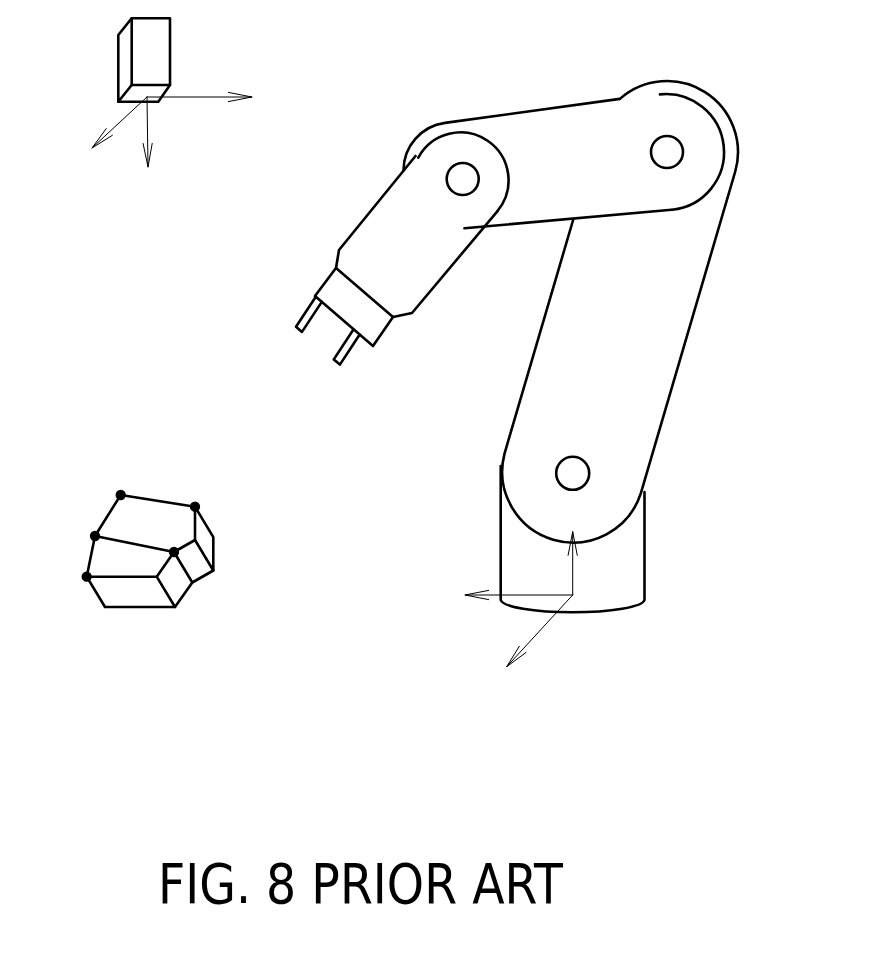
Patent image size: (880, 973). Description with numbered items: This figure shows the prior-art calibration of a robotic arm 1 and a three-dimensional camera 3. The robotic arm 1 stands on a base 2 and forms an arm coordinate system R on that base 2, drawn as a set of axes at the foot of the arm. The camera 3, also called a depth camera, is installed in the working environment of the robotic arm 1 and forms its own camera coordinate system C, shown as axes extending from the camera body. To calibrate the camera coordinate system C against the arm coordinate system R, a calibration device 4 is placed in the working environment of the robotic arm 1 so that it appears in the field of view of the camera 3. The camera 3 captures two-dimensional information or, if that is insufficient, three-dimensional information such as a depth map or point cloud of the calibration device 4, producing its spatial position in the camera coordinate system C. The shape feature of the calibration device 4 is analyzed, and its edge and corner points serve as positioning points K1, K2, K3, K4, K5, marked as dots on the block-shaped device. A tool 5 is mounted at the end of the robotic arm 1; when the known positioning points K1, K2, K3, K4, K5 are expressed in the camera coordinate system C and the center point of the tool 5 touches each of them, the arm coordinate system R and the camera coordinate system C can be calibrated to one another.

The robotic arm 1 is at (548, 107).
The base 2 is at (500, 546).
The 3D camera 3 is at (118, 63).
The calibration device 4 is at (109, 516).
The tool 5 is at (343, 359).
The positioning point K1 is at (122, 492).
The positioning point K2 is at (197, 505).
The positioning point K3 is at (93, 536).
The positioning point K4 is at (175, 555).
The positioning point K5 is at (86, 580).
The camera coordinate system C is at (173, 142).
The arm coordinate system R is at (569, 639).